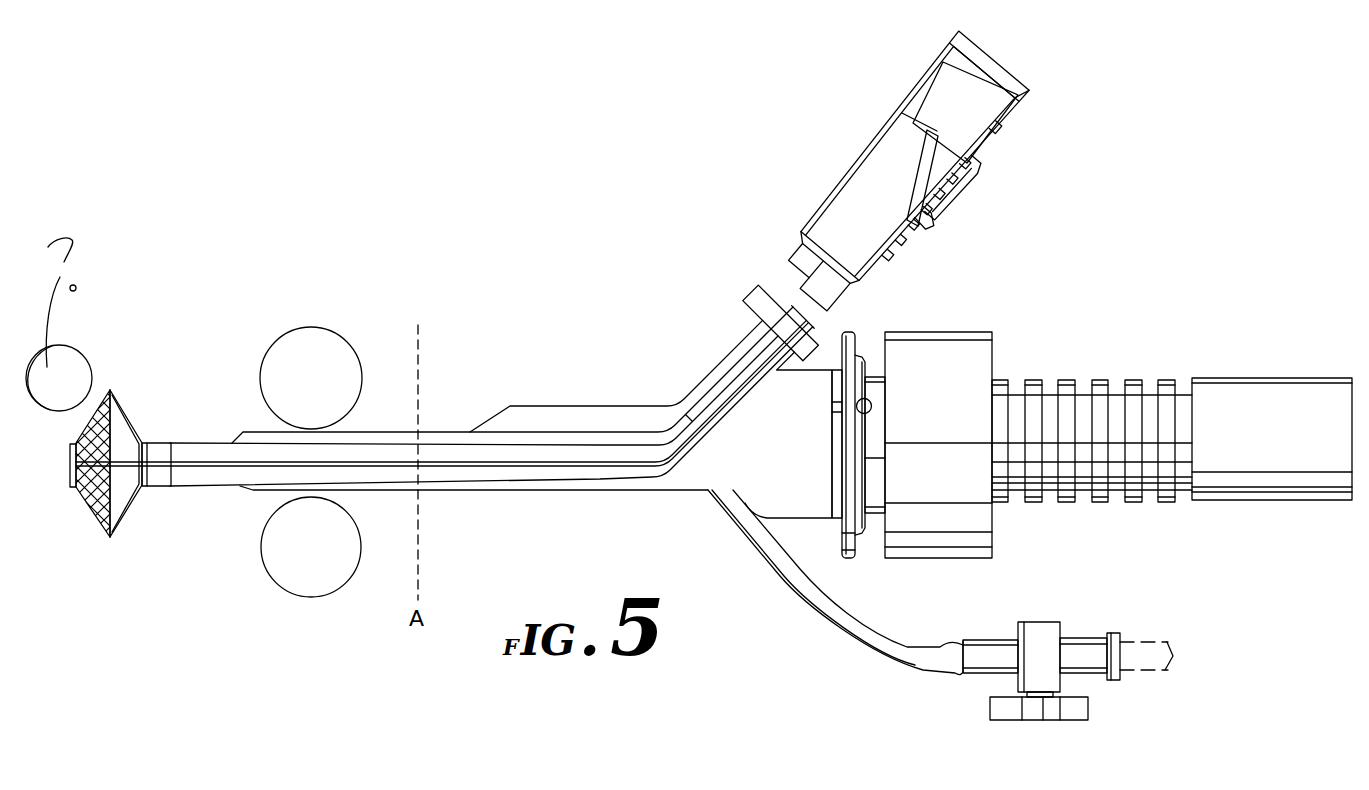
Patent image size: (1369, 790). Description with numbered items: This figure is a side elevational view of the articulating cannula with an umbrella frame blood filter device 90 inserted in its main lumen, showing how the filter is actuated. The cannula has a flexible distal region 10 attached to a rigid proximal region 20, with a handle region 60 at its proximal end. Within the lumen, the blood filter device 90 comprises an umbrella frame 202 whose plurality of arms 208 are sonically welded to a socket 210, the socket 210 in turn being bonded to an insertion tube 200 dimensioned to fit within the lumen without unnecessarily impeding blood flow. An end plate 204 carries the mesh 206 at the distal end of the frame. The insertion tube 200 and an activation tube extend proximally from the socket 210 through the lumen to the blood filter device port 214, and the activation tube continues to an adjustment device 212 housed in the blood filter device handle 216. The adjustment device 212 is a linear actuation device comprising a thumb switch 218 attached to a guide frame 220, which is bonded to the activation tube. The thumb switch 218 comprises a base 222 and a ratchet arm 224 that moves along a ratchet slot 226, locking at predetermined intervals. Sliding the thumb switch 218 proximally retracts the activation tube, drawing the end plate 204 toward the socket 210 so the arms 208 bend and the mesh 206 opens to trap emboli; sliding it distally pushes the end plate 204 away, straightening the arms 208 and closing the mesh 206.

The distal region 10 is at (385, 396).
The proximal region 20 is at (455, 406).
The handle region 60 is at (1285, 358).
The blood filter device 90 is at (102, 368).
The insertion tube 200 is at (201, 487).
The umbrella frame 202 is at (214, 461).
The end plate 204 is at (70, 486).
The mesh 206 is at (97, 421).
The arms 208 is at (134, 432).
The socket 210 is at (150, 436).
The adjustment device 212 is at (980, 176).
The blood filter device port 214 is at (788, 300).
The blood filter device handle 216 is at (846, 174).
The thumb switch 218 is at (1003, 142).
The guide frame 220 is at (925, 88).
The base 222 is at (1003, 124).
The ratchet arm 224 is at (936, 220).
The ratchet slot 226 is at (905, 238).